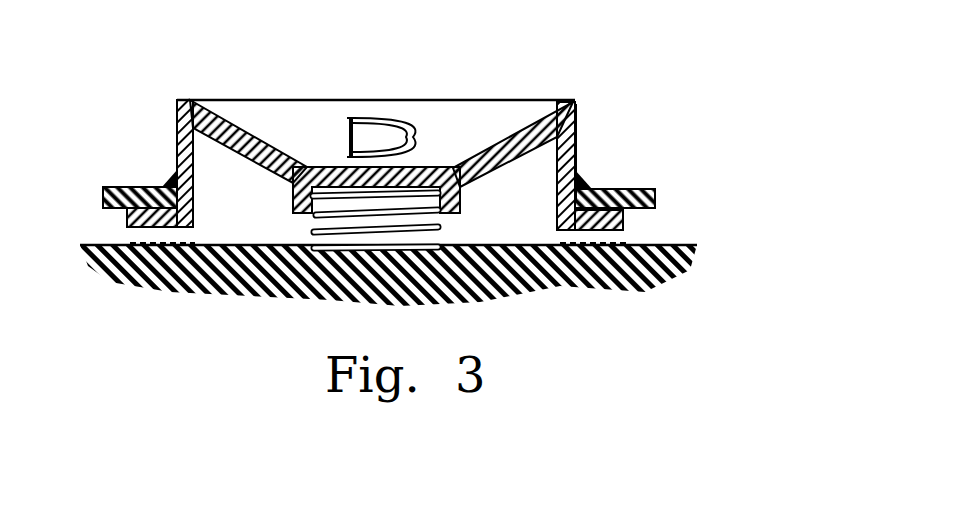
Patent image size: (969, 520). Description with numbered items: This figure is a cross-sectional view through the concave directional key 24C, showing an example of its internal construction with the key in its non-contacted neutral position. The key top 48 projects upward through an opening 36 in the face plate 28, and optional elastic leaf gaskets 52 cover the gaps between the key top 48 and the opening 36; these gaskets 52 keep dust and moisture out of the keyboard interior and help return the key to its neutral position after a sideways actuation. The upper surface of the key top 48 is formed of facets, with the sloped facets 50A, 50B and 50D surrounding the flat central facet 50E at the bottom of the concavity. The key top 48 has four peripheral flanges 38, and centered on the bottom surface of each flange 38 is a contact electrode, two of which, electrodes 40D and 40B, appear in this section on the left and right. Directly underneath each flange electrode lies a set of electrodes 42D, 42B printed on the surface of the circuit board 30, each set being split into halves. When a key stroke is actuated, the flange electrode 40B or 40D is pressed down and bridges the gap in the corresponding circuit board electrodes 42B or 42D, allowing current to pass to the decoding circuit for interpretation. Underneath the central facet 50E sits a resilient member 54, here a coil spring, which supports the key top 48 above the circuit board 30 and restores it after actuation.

The directional key 24C is at (384, 100).
The face plate 28 is at (102, 200).
The circuit board 30 is at (630, 282).
The opening 36 is at (582, 185).
The peripheral flange 38 is at (624, 228).
The contact electrode 40B is at (600, 236).
The contact electrode 40D is at (178, 228).
The set of electrodes 42B is at (567, 246).
The set of electrodes 42D is at (137, 243).
The key top 48 is at (577, 172).
The facet of key top 50A is at (315, 118).
The facet of key top 50B is at (527, 135).
The facet of key top 50D is at (266, 142).
The central facet 50E is at (431, 168).
The elastic leaf gasket 52 is at (170, 183).
The resilient member 54 is at (411, 232).